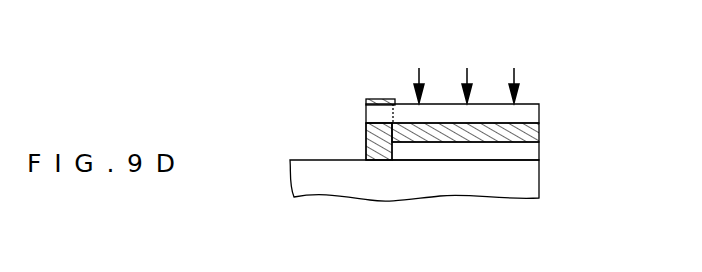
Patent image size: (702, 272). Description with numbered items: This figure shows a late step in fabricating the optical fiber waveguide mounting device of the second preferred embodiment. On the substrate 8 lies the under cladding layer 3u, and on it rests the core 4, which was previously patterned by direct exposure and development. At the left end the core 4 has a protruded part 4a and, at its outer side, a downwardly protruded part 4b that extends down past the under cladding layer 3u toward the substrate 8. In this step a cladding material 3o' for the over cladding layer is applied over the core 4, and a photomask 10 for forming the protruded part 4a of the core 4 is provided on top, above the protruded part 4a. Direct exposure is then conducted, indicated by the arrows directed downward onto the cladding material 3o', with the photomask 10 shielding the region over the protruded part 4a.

The substrate 8 is at (527, 183).
The under cladding layer 3u is at (527, 152).
The core 4 is at (530, 130).
The protruded part 4a is at (366, 138).
The downwardly protruded part 4b is at (380, 160).
The cladding material 3o' is at (491, 105).
The photomask 10 is at (376, 99).